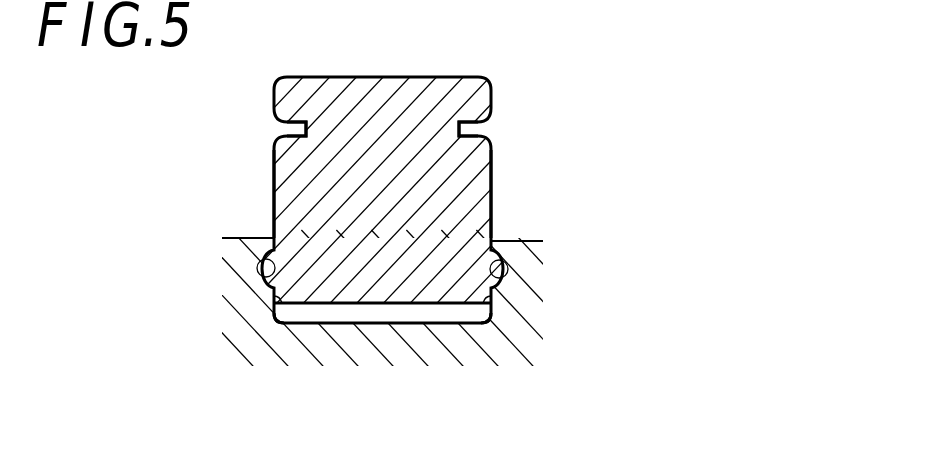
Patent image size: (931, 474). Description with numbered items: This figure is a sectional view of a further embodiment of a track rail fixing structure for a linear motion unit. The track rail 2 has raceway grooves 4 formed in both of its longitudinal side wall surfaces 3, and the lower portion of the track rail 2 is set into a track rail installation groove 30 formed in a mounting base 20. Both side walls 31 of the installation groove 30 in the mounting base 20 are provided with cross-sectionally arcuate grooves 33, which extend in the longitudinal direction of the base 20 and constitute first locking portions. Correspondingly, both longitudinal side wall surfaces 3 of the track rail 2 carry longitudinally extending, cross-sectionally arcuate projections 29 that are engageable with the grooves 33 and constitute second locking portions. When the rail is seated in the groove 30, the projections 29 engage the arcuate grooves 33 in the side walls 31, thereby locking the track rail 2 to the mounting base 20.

The track rail 2 is at (378, 135).
The longitudinal side wall surfaces 3 is at (273, 184).
The raceway grooves 4 is at (282, 143).
The mounting base 20 is at (513, 307).
The cross-sectionally arcuate projections 29 is at (273, 268).
The track rail installation groove 30 is at (375, 315).
The side walls 31 is at (282, 324).
The cross-sectionally arcuate grooves 33 is at (262, 268).